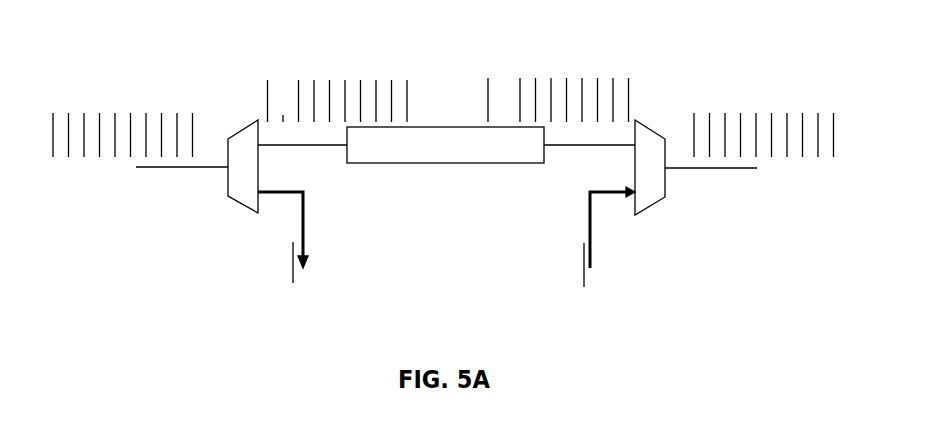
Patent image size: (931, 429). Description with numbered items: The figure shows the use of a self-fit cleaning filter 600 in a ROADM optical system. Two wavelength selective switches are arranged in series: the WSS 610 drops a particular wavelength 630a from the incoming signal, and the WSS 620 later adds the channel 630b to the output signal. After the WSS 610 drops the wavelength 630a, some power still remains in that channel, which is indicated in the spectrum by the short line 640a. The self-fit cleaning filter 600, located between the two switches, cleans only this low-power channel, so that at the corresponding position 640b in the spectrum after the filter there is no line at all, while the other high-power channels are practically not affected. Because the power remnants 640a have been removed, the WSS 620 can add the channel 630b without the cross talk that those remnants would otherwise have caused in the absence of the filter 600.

The self-fit cleaning filter 600 is at (455, 166).
The WSS 610 is at (238, 199).
The WSS 620 is at (647, 208).
The dropped wavelength 630a is at (75, 97).
The added channel 630b is at (713, 102).
The remaining power in the channel 640a is at (287, 75).
The cleaned channel position 640b is at (508, 75).